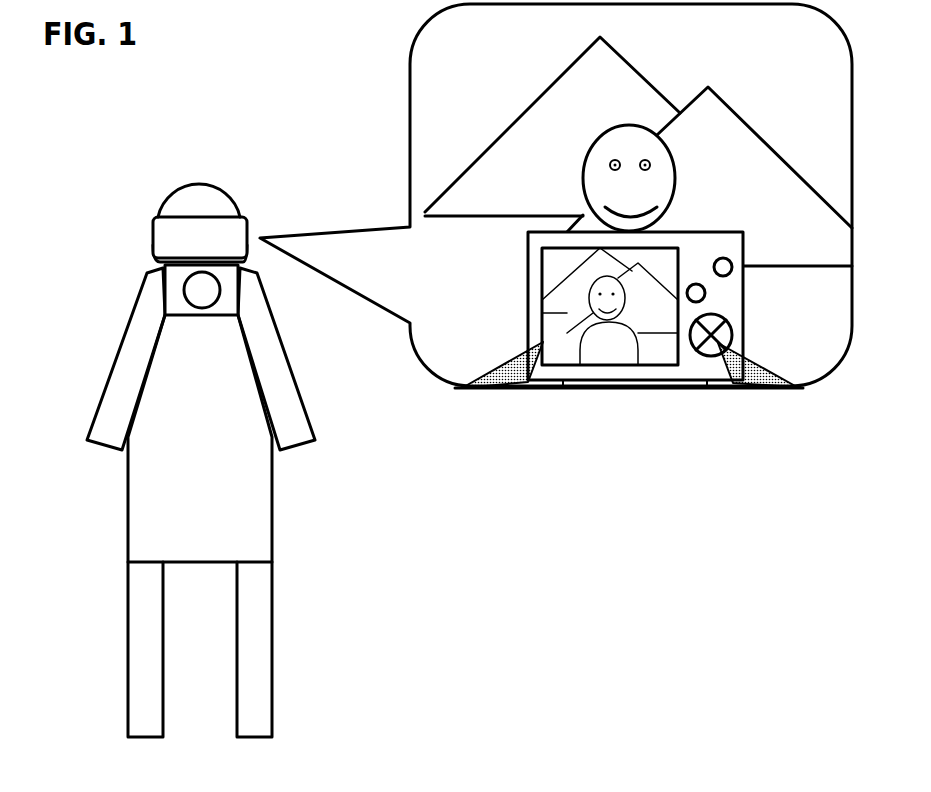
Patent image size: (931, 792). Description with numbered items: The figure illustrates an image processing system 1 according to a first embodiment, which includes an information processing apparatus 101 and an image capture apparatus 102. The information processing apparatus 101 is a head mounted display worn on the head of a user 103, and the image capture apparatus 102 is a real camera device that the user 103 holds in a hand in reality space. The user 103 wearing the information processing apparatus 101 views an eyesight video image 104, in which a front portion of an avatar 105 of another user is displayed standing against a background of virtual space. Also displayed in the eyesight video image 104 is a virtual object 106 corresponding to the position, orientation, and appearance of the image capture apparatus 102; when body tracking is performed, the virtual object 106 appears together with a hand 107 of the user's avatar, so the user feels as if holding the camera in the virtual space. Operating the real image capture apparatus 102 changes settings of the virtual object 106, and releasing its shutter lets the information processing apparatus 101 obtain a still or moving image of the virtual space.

The image processing system 1 is at (120, 163).
The information processing apparatus 101 is at (157, 238).
The image capture apparatus 102 is at (240, 287).
The user 103 is at (197, 197).
The eyesight video image 104 is at (812, 385).
The avatar 105 is at (675, 182).
The virtual object 106 is at (528, 307).
The hand 107 is at (462, 388).